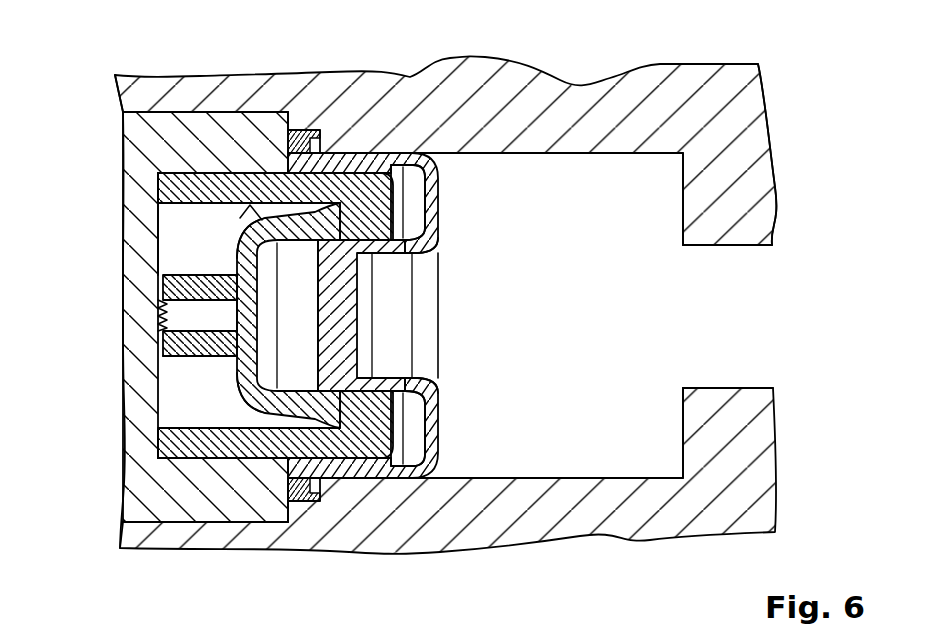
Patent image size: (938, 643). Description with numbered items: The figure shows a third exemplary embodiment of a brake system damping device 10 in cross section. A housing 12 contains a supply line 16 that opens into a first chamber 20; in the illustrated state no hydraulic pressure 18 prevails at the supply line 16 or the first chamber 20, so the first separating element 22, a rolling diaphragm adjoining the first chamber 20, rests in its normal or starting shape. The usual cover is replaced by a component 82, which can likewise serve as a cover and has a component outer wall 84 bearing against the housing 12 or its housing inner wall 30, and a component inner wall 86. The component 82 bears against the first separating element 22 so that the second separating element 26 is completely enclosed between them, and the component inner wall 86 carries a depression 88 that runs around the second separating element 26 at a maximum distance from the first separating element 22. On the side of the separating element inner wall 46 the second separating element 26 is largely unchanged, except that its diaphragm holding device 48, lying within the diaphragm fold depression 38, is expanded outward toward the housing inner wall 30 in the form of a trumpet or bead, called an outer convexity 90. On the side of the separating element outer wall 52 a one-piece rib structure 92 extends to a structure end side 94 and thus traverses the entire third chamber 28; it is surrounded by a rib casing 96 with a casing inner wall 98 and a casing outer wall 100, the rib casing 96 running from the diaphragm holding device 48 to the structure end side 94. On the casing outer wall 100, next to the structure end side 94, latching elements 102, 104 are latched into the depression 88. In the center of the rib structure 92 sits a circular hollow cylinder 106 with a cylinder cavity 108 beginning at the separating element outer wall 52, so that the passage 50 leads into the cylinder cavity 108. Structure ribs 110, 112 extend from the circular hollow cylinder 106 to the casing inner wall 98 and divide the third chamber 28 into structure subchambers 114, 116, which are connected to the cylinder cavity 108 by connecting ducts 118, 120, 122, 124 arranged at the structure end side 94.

The brake system damping device 10 is at (801, 60).
The housing 12 is at (732, 118).
The supply line 16 is at (763, 266).
The hydraulic pressure 18 is at (738, 338).
The first chamber 20 is at (658, 448).
The first separating element 22 is at (396, 170).
The second separating element 26 is at (284, 128).
The third chamber 28 is at (300, 492).
The housing inner wall 30 is at (639, 167).
The diaphragm fold depression 38 is at (430, 438).
The separating element inner wall 46 is at (360, 372).
The diaphragm holding device 48 is at (430, 417).
The passage 50 is at (261, 314).
The separating element outer wall 52 is at (396, 462).
The component 82 is at (253, 172).
The component outer wall 84 is at (200, 110).
The component inner wall 86 is at (188, 186).
The depression 88 is at (155, 449).
The outer convexity 90 is at (432, 466).
The rib structure 92 is at (155, 243).
The structure end side 94 is at (157, 205).
The rib casing 96 is at (258, 468).
The casing inner wall 98 is at (398, 246).
The casing outer wall 100 is at (214, 464).
The latching element 102 is at (155, 182).
The latching element 104 is at (160, 462).
The circular hollow cylinder 106 is at (195, 352).
The cylinder cavity 108 is at (330, 296).
The structure rib 110 is at (178, 267).
The structure rib 112 is at (160, 449).
The structure subchamber 114 is at (185, 236).
The structure subchamber 116 is at (185, 404).
The connecting duct 118 is at (161, 287).
The connecting duct 120 is at (157, 314).
The connecting duct 122 is at (161, 340).
The connecting duct 124 is at (165, 356).